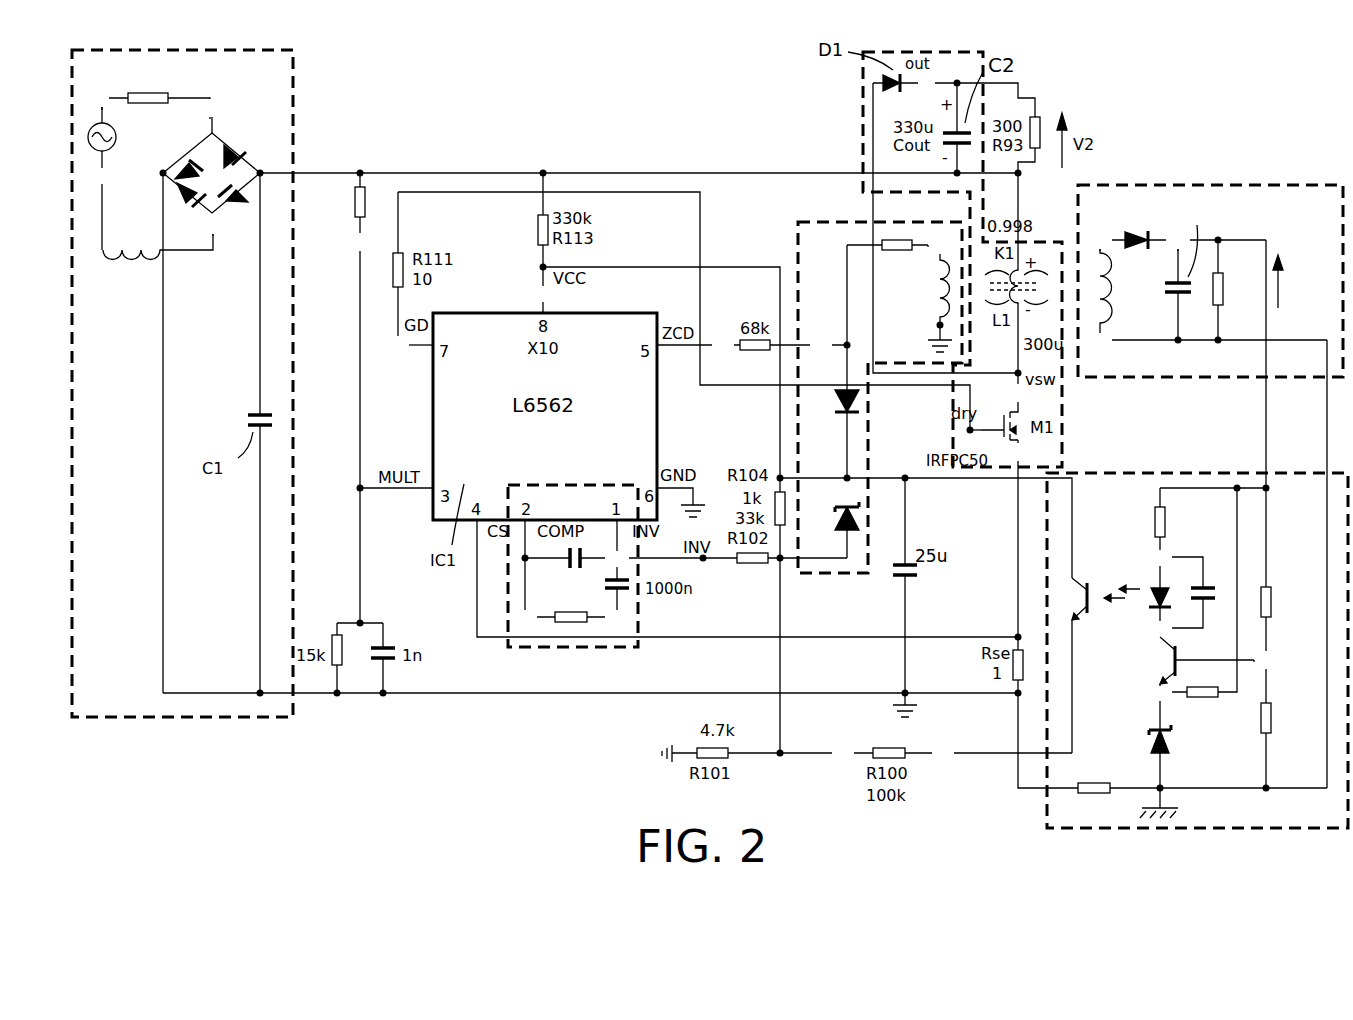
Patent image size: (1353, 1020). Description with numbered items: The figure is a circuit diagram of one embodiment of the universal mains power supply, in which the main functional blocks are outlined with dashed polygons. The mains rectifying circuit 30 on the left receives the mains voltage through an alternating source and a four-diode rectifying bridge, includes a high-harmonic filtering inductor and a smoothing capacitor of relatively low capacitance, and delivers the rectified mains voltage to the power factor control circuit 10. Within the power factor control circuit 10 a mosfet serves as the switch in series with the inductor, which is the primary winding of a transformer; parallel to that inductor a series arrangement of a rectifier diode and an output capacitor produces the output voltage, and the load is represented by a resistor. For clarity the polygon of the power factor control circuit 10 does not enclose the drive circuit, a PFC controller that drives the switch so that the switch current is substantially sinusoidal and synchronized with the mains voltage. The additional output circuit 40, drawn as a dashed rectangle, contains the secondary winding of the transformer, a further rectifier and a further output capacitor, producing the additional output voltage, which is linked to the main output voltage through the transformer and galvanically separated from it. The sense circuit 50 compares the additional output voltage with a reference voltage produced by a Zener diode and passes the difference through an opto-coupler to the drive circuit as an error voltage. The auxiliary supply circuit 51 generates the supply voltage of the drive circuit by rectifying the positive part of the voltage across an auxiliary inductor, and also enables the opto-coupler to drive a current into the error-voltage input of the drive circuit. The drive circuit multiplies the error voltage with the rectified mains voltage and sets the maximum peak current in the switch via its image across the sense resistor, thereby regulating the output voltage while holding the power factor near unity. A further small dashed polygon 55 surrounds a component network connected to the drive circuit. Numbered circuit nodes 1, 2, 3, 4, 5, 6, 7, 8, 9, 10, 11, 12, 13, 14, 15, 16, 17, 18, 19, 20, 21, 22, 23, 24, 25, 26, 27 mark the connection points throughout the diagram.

The circuit node 1 (C1 positive terminal) 1 is at (260, 388).
The circuit node 2 (AC source positive) 2 is at (102, 99).
The circuit node 3 (AC source negative) 3 is at (102, 175).
The circuit node 4 (bridge terminal A) 4 is at (213, 226).
The circuit node 5 (bridge terminal B) 5 is at (210, 109).
The circuit node 6 (switch node vsw) 6 is at (1018, 387).
The circuit node 7 (gate drive) 7 is at (982, 430).
The circuit node 8 (MOSFET source) 8 is at (1018, 540).
The circuit node 9 (output) 9 is at (925, 83).
The power factor control circuit 10 is at (863, 130).
The circuit node 11 is at (525, 617).
The circuit node 12 is at (617, 617).
The circuit node 13 is at (617, 558).
The circuit node 14 is at (940, 245).
The circuit node 15 is at (722, 345).
The circuit node 16 is at (820, 345).
The circuit node 17 (gate drive output) 17 is at (409, 345).
The circuit node 18 (VCC) 18 is at (543, 293).
The circuit node 19 is at (1100, 340).
The circuit node 20 is at (1100, 241).
The circuit node 21 is at (1178, 241).
The circuit node 22 is at (1160, 692).
The circuit node 23 is at (842, 753).
The circuit node 24 is at (942, 753).
The circuit node 25 is at (1160, 557).
The circuit node 26 is at (1160, 628).
The circuit node 27 is at (1266, 660).
The mains rectifying circuit 30 is at (295, 95).
The additional output circuit 40 is at (1272, 184).
The sense circuit 50 is at (1046, 815).
The auxiliary supply circuit 51 is at (798, 240).
The compensation network 55 is at (572, 648).